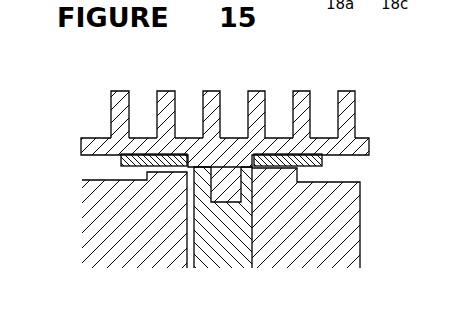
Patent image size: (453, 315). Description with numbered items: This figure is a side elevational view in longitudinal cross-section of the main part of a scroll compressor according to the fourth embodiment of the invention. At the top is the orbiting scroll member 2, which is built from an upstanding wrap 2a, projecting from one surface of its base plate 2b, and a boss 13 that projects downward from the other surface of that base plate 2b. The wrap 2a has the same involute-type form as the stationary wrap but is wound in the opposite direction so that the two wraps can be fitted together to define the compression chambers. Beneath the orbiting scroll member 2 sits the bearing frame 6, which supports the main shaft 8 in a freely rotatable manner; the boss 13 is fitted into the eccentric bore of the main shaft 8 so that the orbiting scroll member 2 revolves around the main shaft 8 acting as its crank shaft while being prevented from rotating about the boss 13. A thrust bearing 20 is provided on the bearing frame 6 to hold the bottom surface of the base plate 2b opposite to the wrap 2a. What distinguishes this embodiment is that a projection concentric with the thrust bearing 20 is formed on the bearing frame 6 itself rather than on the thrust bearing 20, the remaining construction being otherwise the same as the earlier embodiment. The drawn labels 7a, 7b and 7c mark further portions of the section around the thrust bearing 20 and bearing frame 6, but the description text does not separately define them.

The orbiting scroll member 2 is at (165, 88).
The wrap 2a is at (205, 92).
The base plate 2b is at (95, 137).
The thrust bearing 20 is at (322, 164).
The boss 13 is at (226, 181).
The bearing frame 6 is at (136, 228).
The main shaft 8 is at (235, 244).
The upper portion of member 7 7a is at (268, 177).
The shoulder of member 7 7b is at (305, 178).
The lower portion of member 7 7c is at (294, 190).